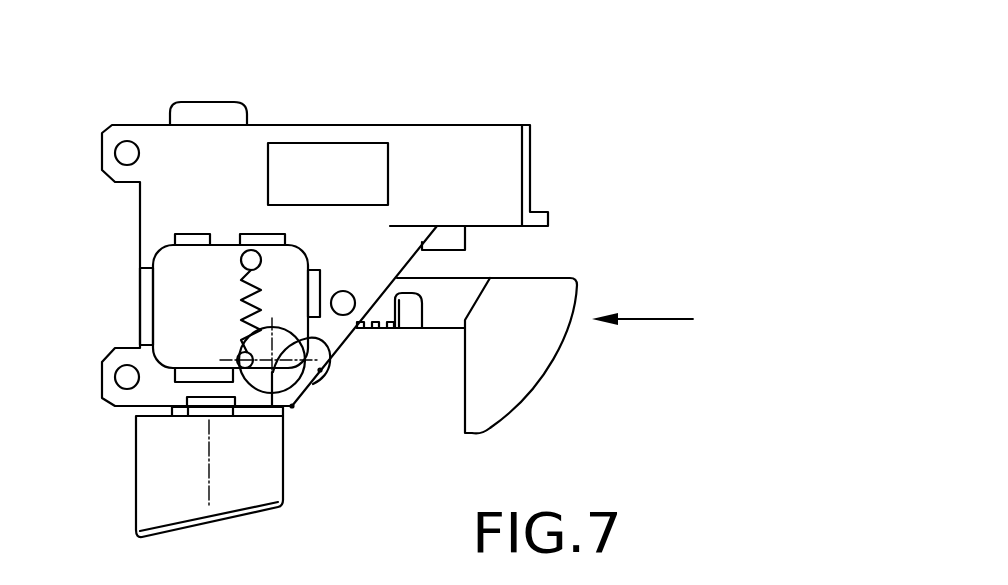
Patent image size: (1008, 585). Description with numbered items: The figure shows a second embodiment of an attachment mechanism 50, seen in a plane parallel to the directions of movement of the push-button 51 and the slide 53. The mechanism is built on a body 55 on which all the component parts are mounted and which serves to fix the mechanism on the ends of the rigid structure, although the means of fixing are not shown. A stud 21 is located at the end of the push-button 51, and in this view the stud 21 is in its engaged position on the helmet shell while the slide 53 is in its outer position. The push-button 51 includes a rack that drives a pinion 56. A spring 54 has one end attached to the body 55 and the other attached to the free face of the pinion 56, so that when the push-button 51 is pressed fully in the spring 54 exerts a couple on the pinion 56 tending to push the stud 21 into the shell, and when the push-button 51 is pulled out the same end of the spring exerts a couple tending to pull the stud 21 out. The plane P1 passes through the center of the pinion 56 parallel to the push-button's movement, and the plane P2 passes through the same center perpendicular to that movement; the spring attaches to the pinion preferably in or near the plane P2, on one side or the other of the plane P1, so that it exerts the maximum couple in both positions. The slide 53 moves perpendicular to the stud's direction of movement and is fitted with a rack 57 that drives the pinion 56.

The attachment mechanism 50 is at (463, 90).
The body 55 is at (492, 157).
The stud 21 is at (188, 122).
The spring 54 is at (247, 288).
The pinion 56 is at (317, 388).
The plane P2 is at (320, 370).
The plane P1 is at (292, 407).
The rack 57 is at (384, 330).
The slide 53 is at (537, 298).
The push-button 51 is at (177, 483).